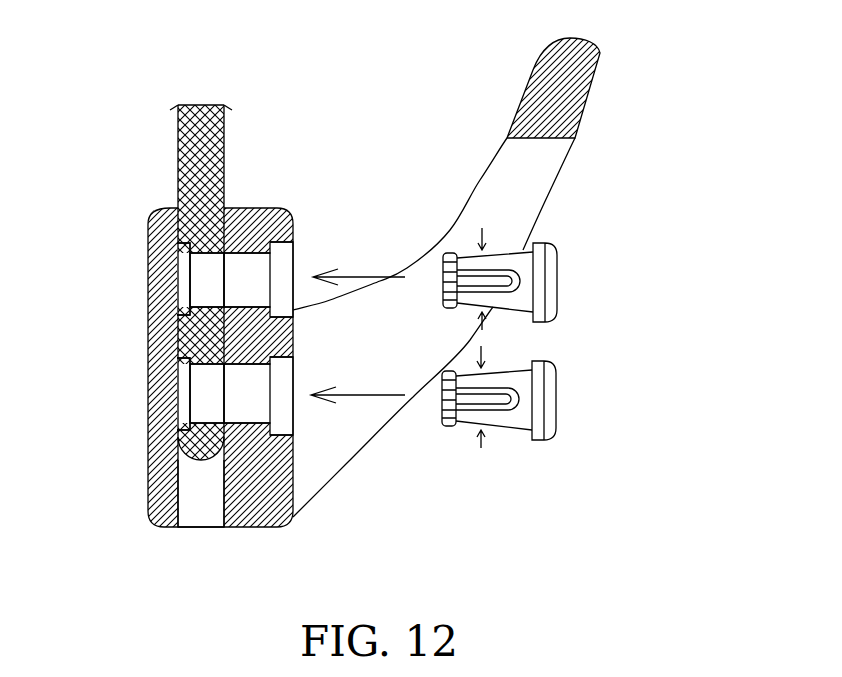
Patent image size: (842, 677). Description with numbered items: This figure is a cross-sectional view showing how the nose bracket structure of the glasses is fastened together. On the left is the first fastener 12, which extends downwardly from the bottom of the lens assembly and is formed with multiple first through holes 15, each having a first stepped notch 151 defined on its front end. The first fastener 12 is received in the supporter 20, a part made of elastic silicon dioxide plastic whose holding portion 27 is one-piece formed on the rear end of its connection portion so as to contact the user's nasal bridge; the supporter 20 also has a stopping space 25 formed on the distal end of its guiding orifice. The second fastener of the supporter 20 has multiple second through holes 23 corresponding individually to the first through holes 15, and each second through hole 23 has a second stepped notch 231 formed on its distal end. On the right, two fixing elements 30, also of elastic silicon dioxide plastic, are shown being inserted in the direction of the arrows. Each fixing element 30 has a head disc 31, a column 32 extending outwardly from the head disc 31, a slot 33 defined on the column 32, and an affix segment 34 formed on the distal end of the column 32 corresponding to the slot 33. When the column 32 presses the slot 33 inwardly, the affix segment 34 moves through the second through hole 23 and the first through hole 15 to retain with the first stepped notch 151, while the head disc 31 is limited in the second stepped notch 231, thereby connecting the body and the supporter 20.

The first fastener 12 is at (187, 158).
The first through hole 15 is at (203, 277).
The first stepped notch 151 is at (183, 278).
The supporter 20 is at (248, 230).
The second through hole 23 is at (247, 277).
The second stepped notch 231 is at (281, 272).
The stopping space 25 is at (212, 513).
The holding portion 27 is at (596, 77).
The fixing element 30 is at (555, 336).
The head disc 31 is at (557, 280).
The column 32 is at (475, 265).
The slot 33 is at (505, 282).
The affix segment 34 is at (453, 257).